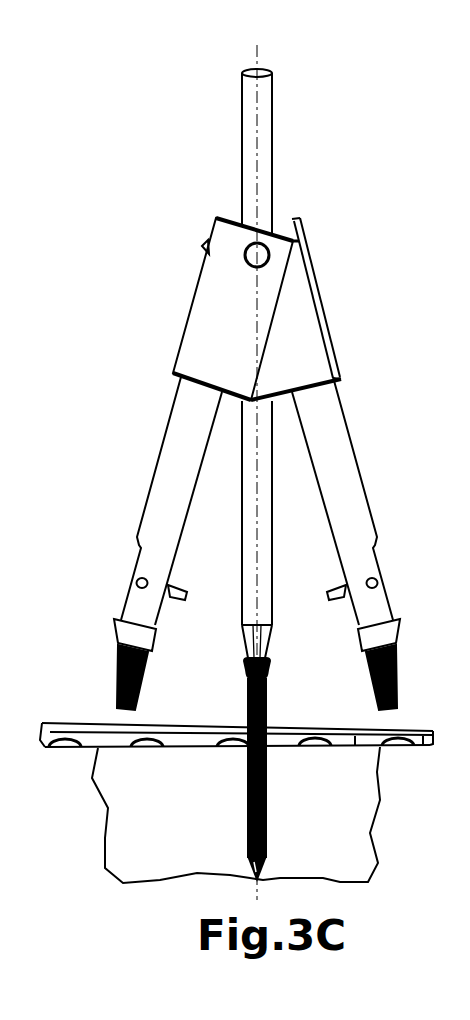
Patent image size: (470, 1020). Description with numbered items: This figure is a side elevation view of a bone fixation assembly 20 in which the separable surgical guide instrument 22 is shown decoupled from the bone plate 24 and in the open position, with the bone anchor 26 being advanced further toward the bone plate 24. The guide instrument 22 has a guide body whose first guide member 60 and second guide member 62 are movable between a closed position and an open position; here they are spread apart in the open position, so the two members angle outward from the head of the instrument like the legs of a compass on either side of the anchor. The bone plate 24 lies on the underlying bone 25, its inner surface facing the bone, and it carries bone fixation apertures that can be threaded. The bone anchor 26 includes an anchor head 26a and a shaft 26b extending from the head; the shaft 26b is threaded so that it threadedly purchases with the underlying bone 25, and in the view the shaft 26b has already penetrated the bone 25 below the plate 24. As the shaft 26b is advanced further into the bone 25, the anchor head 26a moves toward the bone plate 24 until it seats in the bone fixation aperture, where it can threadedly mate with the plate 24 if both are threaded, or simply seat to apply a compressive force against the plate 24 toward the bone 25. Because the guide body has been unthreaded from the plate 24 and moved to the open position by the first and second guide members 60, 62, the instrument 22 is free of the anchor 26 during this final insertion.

The bone fixation assembly 20 is at (161, 122).
The separable surgical guide instrument 22 is at (184, 293).
The bone plate 24 is at (397, 733).
The underlying bone 25 is at (343, 825).
The bone anchor 26 is at (268, 778).
The anchor head 26a is at (272, 668).
The shaft 26b is at (252, 853).
The first guide member 60 is at (350, 438).
The second guide member 62 is at (150, 490).